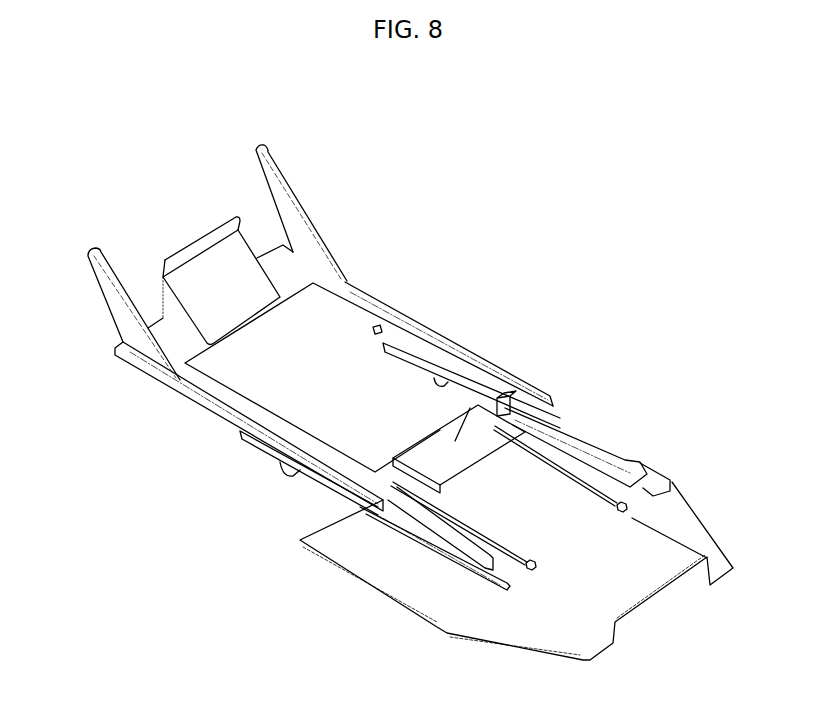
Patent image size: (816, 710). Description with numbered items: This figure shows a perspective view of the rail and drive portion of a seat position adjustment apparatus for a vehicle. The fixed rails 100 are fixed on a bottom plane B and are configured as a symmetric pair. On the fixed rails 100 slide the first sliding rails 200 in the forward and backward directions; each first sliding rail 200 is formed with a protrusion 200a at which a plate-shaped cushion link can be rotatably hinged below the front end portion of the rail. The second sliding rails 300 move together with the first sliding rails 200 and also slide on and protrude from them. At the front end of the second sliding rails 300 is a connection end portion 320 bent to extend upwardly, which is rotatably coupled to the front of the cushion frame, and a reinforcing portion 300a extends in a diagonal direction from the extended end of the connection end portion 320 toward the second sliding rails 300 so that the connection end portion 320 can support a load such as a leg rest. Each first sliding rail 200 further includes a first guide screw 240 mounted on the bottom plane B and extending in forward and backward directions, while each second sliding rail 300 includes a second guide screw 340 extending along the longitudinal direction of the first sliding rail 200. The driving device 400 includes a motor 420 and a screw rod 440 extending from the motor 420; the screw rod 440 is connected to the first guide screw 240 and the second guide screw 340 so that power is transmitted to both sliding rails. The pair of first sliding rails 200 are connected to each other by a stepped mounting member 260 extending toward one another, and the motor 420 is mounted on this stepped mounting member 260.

The fixed rails 100 is at (470, 573).
The first sliding rails 200 is at (620, 473).
The protrusions 200a is at (283, 473).
The first guide screw 240 is at (432, 510).
The stepped mounting member 260 is at (435, 433).
The second sliding rails 300 is at (243, 412).
The reinforcing portion 300a is at (262, 288).
The connection end portion 320 is at (170, 340).
The second guide screw 340 is at (403, 340).
The driving device 400 is at (561, 394).
The motor 420 is at (517, 370).
The screw rod 440 is at (557, 382).
The bottom plane B is at (667, 557).